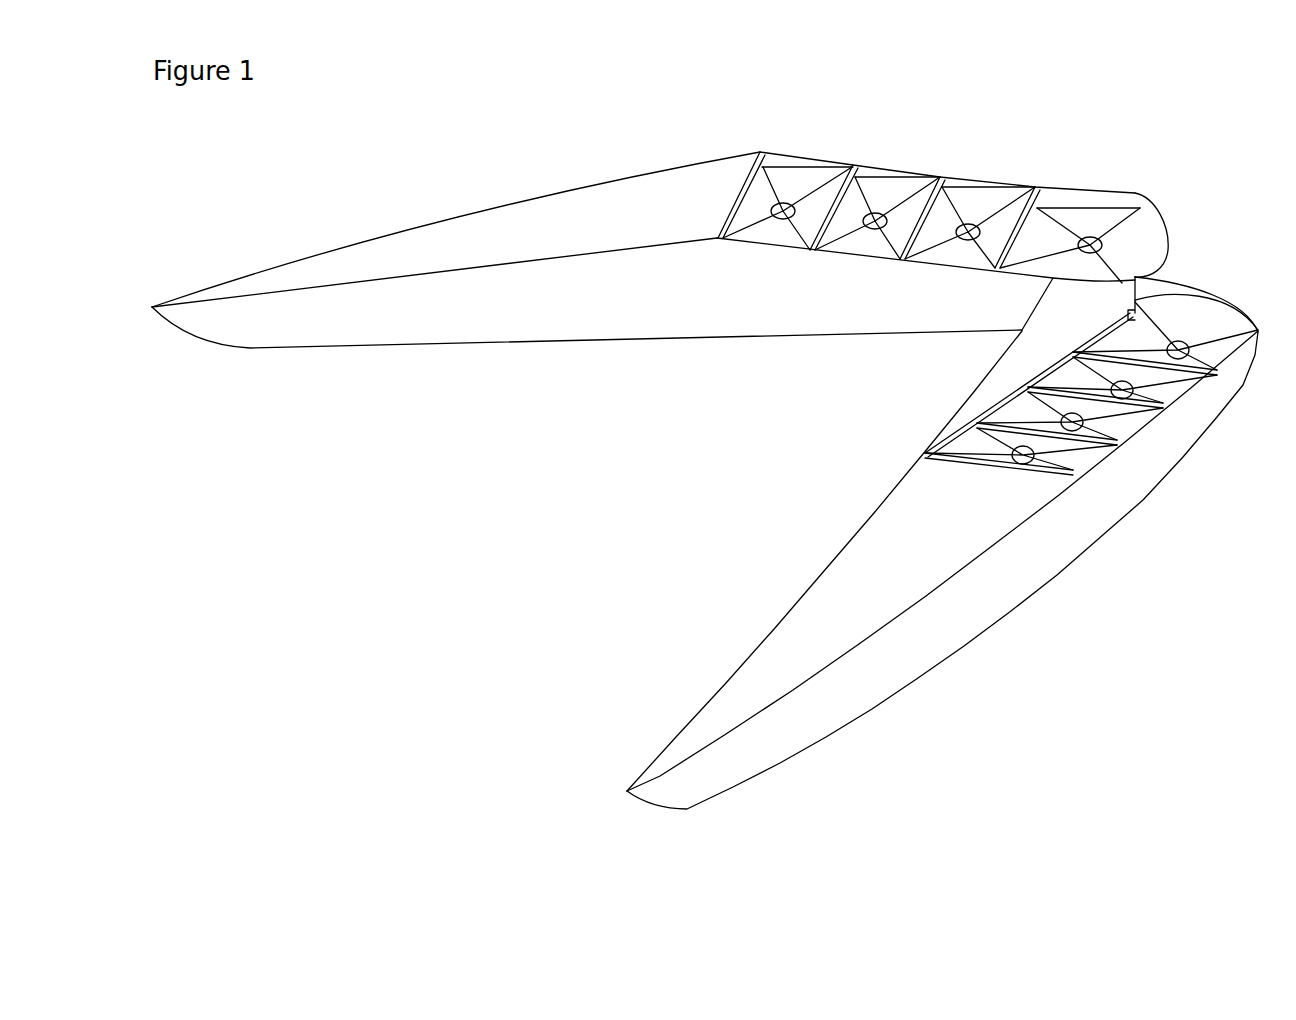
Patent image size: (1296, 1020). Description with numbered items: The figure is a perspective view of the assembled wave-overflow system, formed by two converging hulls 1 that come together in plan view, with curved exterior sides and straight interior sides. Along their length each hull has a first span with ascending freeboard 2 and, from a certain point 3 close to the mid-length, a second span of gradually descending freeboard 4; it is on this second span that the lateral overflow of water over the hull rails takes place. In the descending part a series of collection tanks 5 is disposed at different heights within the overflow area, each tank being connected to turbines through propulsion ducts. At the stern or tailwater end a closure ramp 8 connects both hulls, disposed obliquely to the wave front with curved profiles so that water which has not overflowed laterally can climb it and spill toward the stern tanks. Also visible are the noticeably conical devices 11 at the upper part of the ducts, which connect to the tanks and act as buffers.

The converging hulls 1 is at (272, 330).
The ascending freeboard 2 is at (443, 273).
The certain point 3 is at (717, 238).
The descending freeboard 4 is at (865, 258).
The collection tanks 5 is at (795, 182).
The closure ramp 8 is at (1052, 325).
The noticeably conical device 11 is at (960, 434).